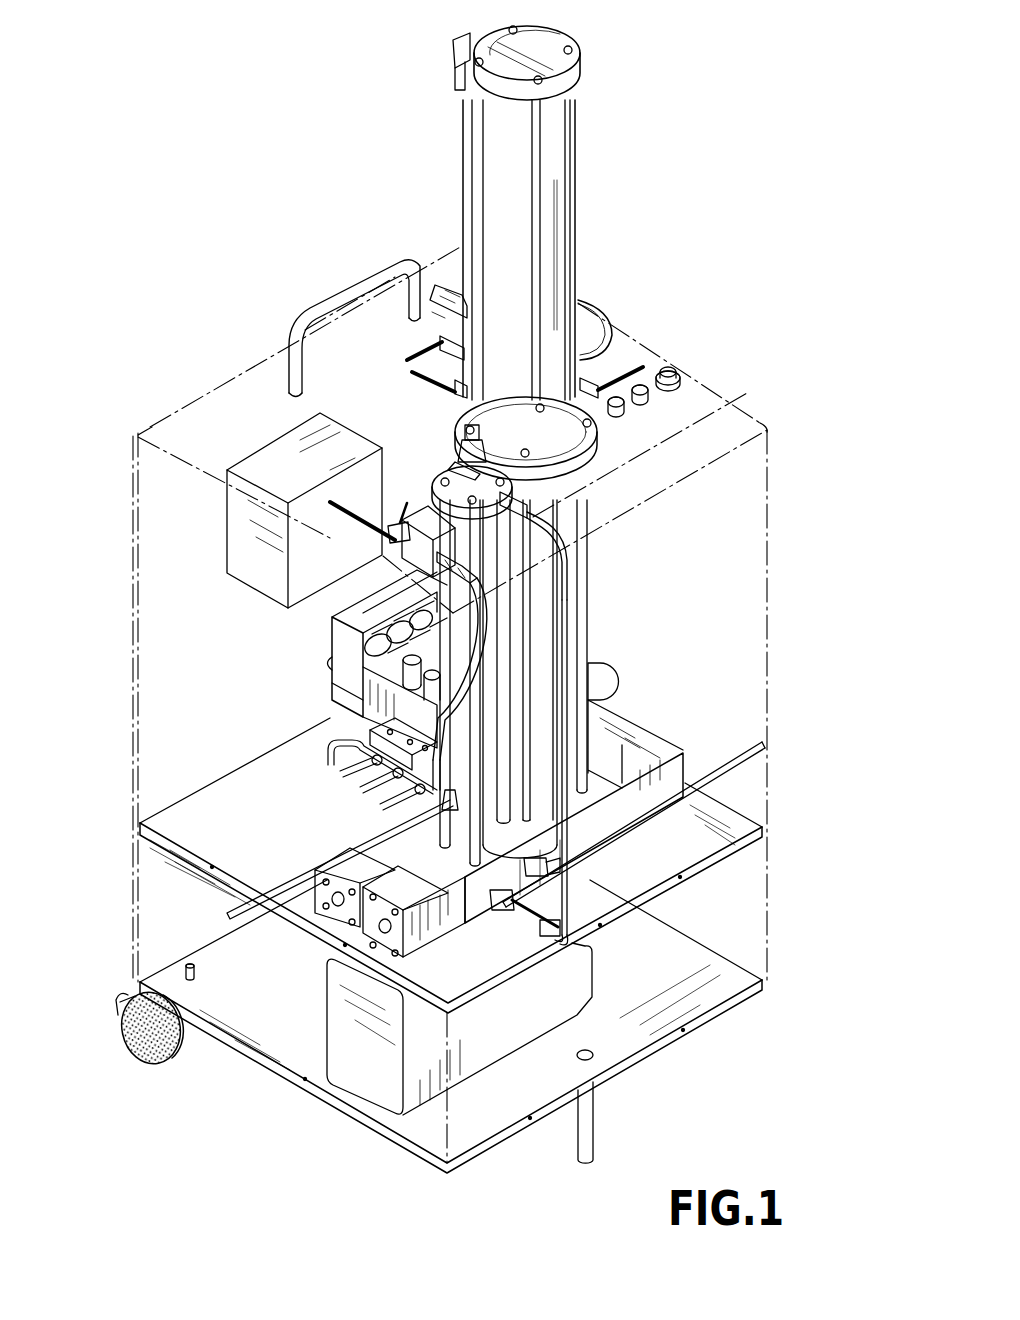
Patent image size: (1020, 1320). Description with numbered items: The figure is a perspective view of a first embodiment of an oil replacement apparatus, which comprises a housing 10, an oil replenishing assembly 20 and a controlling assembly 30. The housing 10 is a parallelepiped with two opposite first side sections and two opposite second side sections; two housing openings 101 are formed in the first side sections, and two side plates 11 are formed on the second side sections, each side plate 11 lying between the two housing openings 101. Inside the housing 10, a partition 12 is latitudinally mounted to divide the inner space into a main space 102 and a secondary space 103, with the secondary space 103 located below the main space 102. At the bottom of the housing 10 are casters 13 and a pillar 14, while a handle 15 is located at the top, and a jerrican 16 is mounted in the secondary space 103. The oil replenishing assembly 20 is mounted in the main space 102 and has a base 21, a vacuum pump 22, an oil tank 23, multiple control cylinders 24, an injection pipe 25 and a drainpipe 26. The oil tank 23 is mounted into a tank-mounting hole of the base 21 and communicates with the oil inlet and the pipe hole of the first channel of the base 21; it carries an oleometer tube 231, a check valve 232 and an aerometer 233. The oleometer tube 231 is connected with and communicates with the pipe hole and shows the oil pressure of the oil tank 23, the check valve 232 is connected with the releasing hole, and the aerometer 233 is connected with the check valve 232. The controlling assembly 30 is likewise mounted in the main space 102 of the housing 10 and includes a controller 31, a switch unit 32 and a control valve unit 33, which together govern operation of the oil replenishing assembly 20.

The housing 10 is at (722, 325).
The side plates 11 is at (136, 569).
The partition 12 is at (178, 822).
The casters 13 is at (156, 1046).
The pillar 14 is at (586, 1130).
The handle 15 is at (328, 308).
The jerrican 16 is at (360, 1082).
The oil replenishing assembly 20 is at (640, 243).
The base 21 is at (583, 832).
The vacuum pump 22 is at (557, 175).
The oil tank 23 is at (460, 827).
The control cylinders 24 is at (358, 858).
The injection pipe 25 is at (740, 757).
The drainpipe 26 is at (228, 916).
The controlling assembly 30 is at (243, 688).
The controller 31 is at (265, 584).
The switch unit 32 is at (678, 393).
The control valve unit 33 is at (345, 665).
The housing openings 101 is at (143, 441).
The main space 102 is at (203, 767).
The secondary space 103 is at (307, 984).
The oleometer tube 231 is at (567, 897).
The check valve 232 is at (409, 515).
The aerometer 233 is at (588, 318).